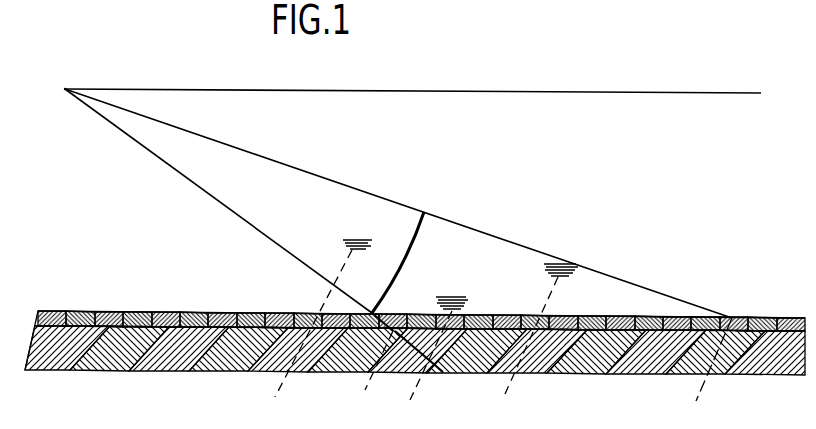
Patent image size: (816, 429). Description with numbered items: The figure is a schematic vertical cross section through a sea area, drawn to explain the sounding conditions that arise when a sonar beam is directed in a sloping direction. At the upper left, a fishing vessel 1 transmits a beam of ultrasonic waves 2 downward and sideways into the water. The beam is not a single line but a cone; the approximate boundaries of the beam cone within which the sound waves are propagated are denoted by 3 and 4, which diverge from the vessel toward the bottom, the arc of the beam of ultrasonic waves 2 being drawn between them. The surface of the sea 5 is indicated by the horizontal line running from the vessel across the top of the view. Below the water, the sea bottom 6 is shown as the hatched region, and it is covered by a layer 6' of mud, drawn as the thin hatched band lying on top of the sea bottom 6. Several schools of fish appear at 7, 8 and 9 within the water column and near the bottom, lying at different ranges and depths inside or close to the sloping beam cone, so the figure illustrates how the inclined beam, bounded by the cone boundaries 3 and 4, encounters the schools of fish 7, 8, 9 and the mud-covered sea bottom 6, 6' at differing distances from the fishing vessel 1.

The fishing vessel 1 is at (64, 91).
The beam of ultrasonic waves 2 is at (427, 211).
The beam cone boundary 3 is at (150, 117).
The beam cone boundary 4 is at (103, 117).
The surface of the sea 5 is at (244, 92).
The sea bottom 6 is at (415, 320).
The layer of mud 6' is at (421, 298).
The school of fish 7 is at (350, 241).
The school of fish 8 is at (456, 287).
The school of fish 9 is at (566, 265).